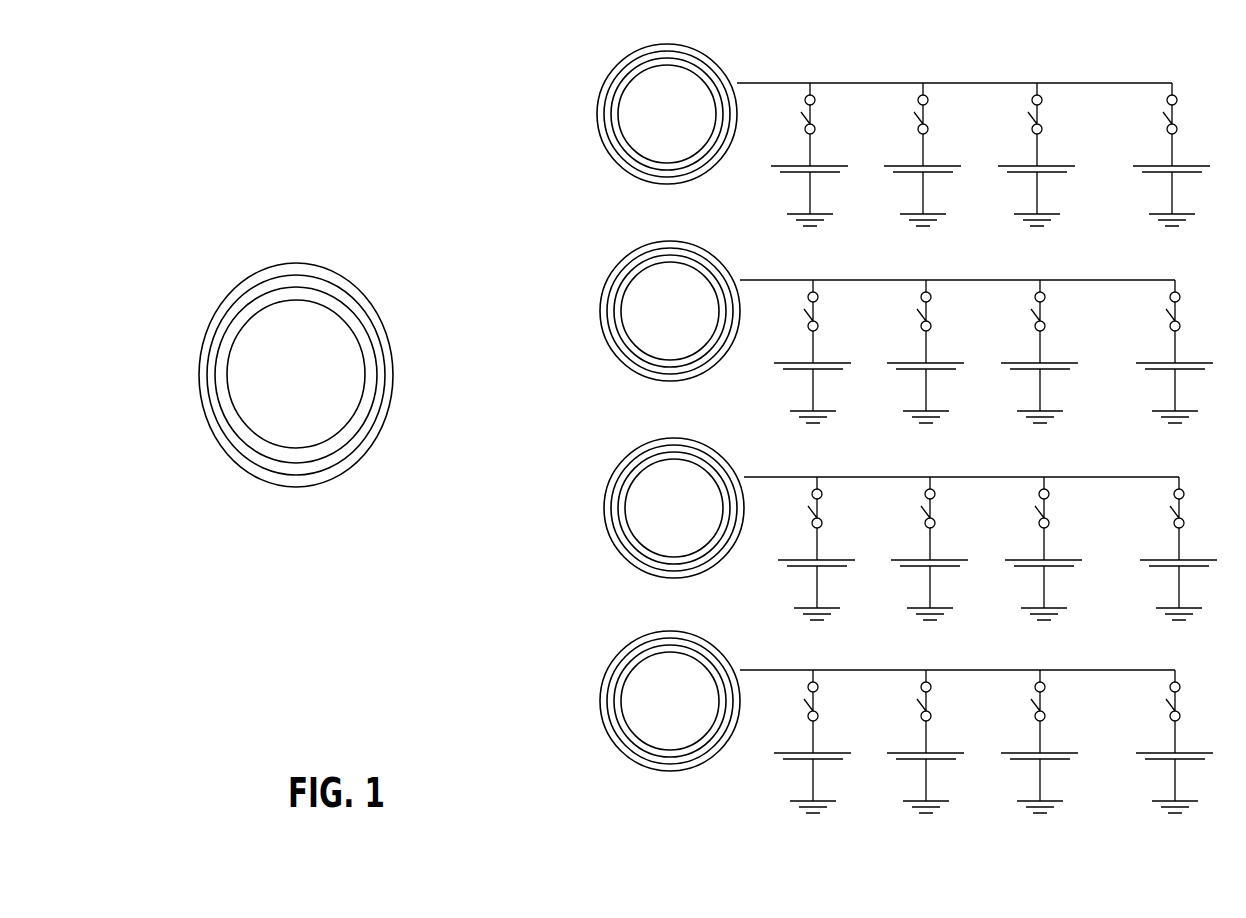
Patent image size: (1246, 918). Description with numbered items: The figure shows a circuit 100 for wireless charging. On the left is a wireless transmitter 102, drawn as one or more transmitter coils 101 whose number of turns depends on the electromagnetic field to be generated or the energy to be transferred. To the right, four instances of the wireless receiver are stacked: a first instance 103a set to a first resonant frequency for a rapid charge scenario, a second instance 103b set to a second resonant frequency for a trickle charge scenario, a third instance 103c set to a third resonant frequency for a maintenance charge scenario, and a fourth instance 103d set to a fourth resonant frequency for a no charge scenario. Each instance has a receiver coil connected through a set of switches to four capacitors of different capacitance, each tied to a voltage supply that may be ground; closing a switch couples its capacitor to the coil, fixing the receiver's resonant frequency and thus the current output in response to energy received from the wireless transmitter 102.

The circuit 100 is at (206, 175).
The transmitter coil 101 is at (245, 285).
The wireless transmitter 102 is at (348, 240).
The first instance of the wireless receiver 103a is at (964, 52).
The second instance of the wireless receiver 103b is at (869, 331).
The third instance of the wireless receiver 103c is at (873, 528).
The fourth instance of the wireless receiver 103d is at (869, 722).